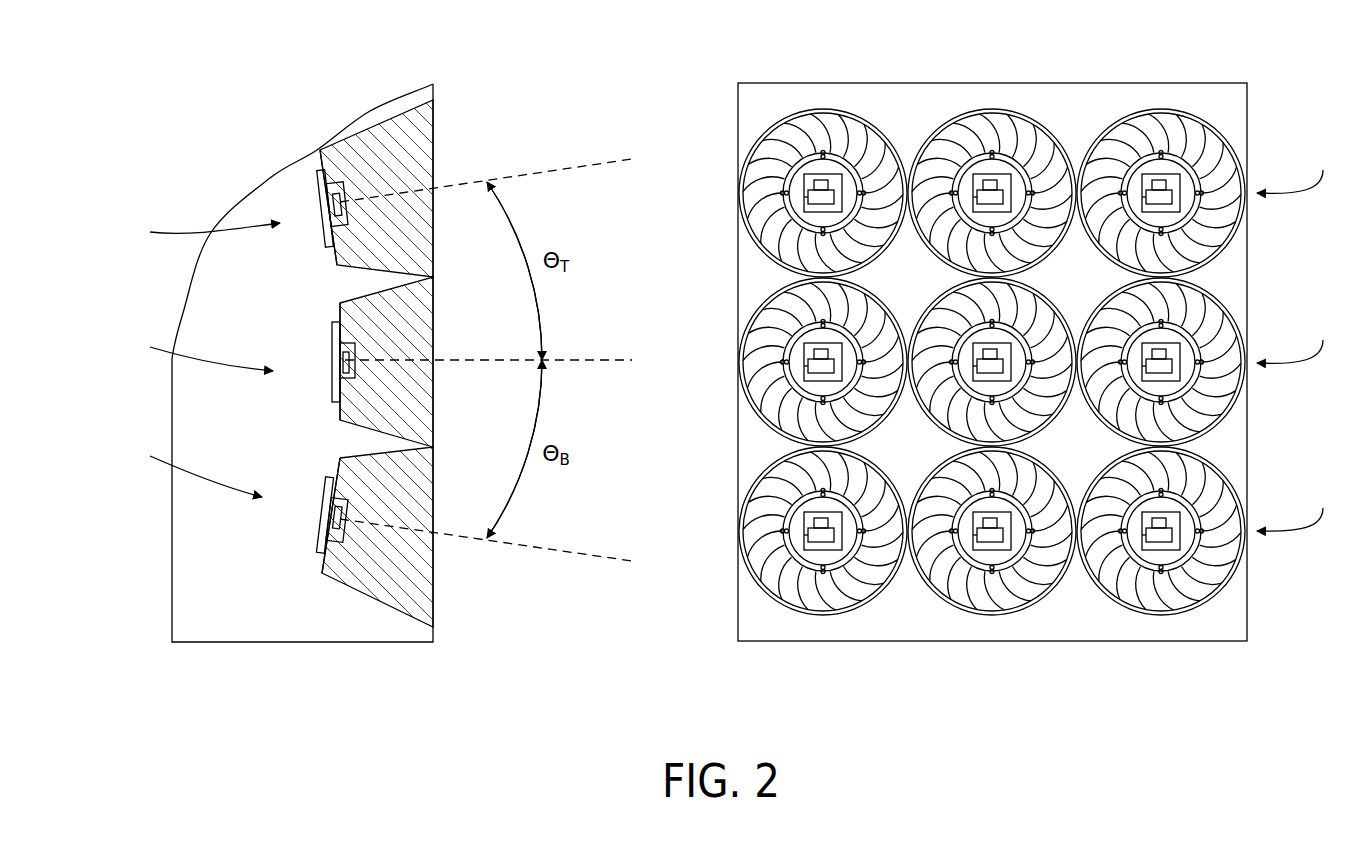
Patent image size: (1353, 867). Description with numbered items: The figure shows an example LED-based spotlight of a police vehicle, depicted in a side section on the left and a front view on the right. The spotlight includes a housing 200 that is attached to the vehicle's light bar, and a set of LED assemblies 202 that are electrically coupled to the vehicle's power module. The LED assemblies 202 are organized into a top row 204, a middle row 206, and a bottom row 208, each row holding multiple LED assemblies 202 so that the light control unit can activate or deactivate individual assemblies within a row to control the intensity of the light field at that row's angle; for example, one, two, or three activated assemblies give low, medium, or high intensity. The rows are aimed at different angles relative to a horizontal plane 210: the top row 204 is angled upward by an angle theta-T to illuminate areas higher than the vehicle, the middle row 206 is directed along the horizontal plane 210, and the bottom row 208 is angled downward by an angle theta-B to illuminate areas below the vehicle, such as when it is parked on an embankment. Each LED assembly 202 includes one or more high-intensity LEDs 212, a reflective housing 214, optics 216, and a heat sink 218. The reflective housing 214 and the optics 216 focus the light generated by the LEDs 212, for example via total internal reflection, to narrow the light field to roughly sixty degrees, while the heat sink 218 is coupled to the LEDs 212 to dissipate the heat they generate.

The housing 200 is at (172, 540).
The LED assemblies 202 is at (353, 132).
The top row 204 is at (732, 188).
The middle row 206 is at (728, 342).
The bottom row 208 is at (728, 477).
The horizontal plane 210 is at (592, 358).
The LEDs 212 is at (325, 207).
The reflective housing 214 is at (412, 138).
The optics 216 is at (318, 156).
The heat sink 218 is at (322, 230).